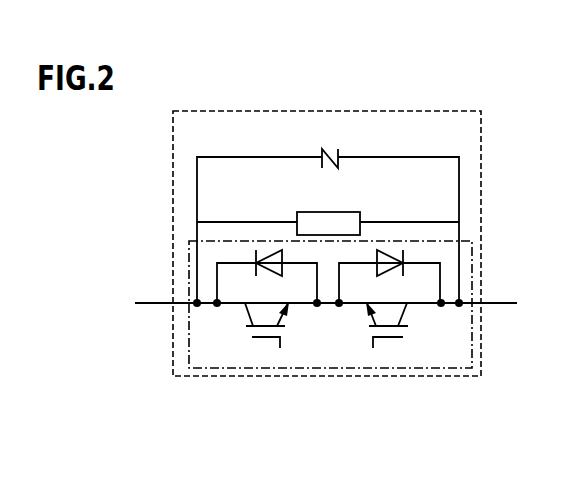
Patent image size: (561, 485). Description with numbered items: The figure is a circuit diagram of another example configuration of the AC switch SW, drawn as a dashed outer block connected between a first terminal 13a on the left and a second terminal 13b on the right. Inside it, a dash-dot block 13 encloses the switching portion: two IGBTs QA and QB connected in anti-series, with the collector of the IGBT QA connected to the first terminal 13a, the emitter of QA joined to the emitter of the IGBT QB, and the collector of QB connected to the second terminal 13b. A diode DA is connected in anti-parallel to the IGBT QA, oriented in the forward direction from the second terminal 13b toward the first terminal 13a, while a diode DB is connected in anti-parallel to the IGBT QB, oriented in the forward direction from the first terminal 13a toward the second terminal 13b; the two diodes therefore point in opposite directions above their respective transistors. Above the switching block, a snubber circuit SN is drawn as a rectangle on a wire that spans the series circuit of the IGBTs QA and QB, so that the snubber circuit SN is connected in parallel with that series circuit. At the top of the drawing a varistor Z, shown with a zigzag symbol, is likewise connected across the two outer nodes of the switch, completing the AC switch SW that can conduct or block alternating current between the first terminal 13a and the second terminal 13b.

The switch unit 13 is at (298, 369).
The first terminal 13a is at (190, 302).
The second terminal 13b is at (470, 302).
The AC switch SW is at (440, 377).
The varistor Z is at (326, 148).
The snubber circuit SN is at (328, 211).
The diode DA is at (255, 263).
The diode DB is at (404, 263).
The IGBT QA is at (265, 338).
The IGBT QB is at (388, 338).